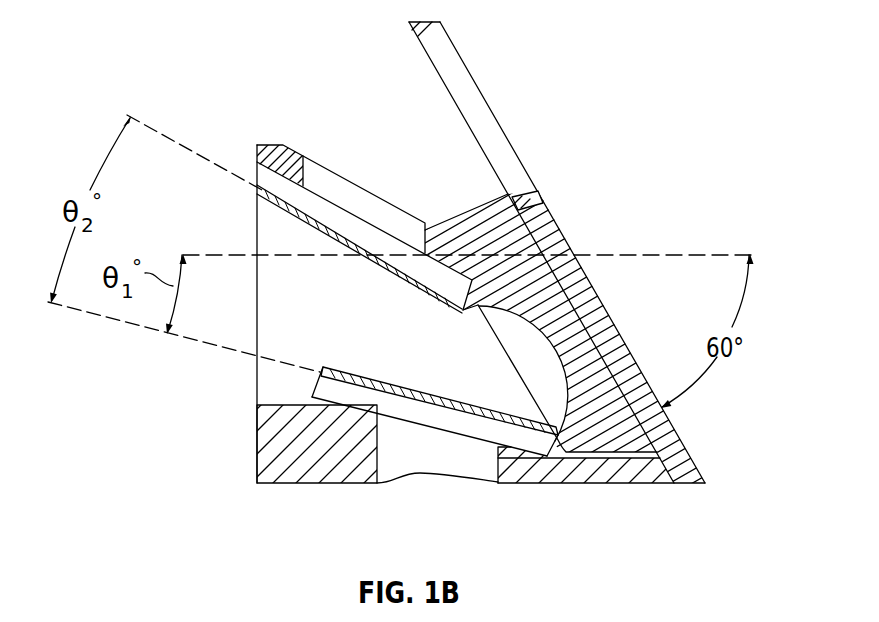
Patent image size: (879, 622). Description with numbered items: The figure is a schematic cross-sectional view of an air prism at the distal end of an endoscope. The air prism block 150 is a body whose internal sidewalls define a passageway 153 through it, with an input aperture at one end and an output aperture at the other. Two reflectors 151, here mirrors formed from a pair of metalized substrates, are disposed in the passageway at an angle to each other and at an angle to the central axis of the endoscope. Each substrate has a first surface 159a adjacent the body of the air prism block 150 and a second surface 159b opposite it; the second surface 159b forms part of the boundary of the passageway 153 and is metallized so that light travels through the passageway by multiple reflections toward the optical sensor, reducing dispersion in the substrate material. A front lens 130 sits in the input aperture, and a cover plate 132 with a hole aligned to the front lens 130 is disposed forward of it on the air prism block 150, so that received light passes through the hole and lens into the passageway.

The front lens 130 is at (560, 308).
The cover plate 132 is at (683, 469).
The air prism block 150 is at (307, 460).
The reflectors 151 is at (338, 220).
The passageway 153 is at (297, 321).
The first surface 159a is at (407, 245).
The second surface 159b is at (378, 258).